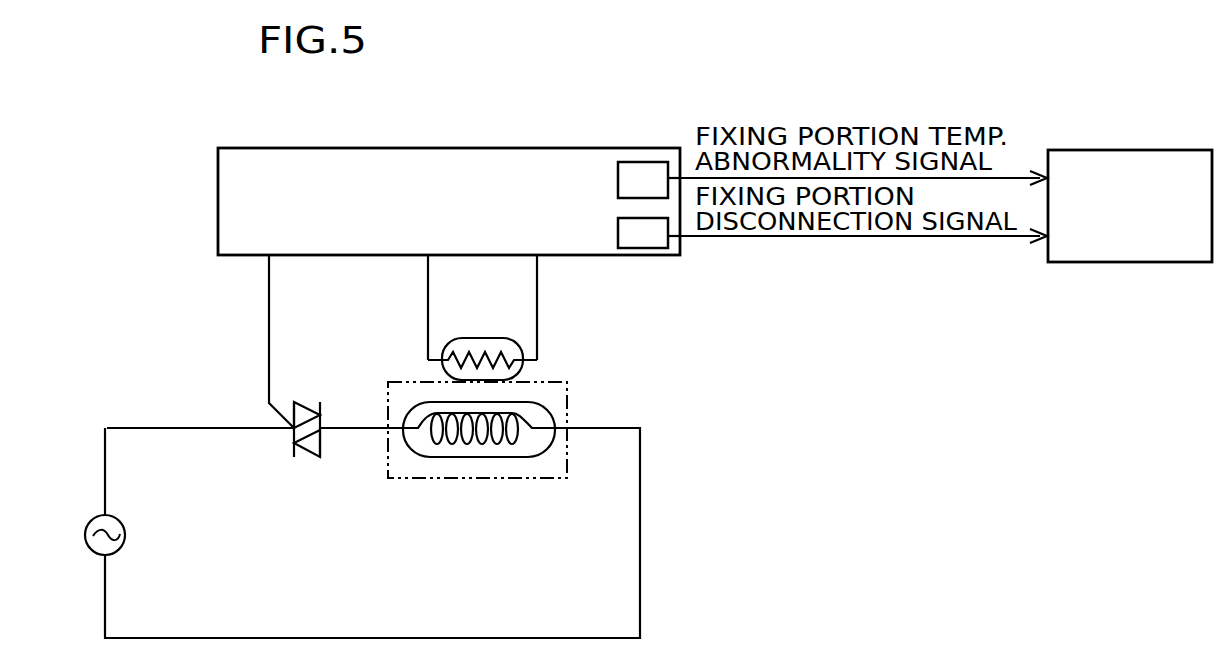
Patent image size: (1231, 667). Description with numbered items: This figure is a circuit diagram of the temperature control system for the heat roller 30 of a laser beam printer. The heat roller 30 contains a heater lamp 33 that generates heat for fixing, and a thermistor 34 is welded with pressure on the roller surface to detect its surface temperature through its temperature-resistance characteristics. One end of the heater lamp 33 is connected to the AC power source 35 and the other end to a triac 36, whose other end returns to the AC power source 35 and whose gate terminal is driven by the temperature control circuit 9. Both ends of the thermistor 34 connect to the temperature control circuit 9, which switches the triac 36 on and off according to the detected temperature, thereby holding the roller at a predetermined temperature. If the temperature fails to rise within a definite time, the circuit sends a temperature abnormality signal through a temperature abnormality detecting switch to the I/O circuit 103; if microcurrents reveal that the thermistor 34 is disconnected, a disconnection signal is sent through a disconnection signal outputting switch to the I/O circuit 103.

The temperature control circuit 9 is at (478, 148).
The I/O circuit 103 is at (1085, 150).
The heat roller 30 is at (567, 395).
The heater lamp 33 is at (458, 457).
The thermistor 34 is at (477, 338).
The AC power source 35 is at (100, 515).
The triac 36 is at (316, 412).